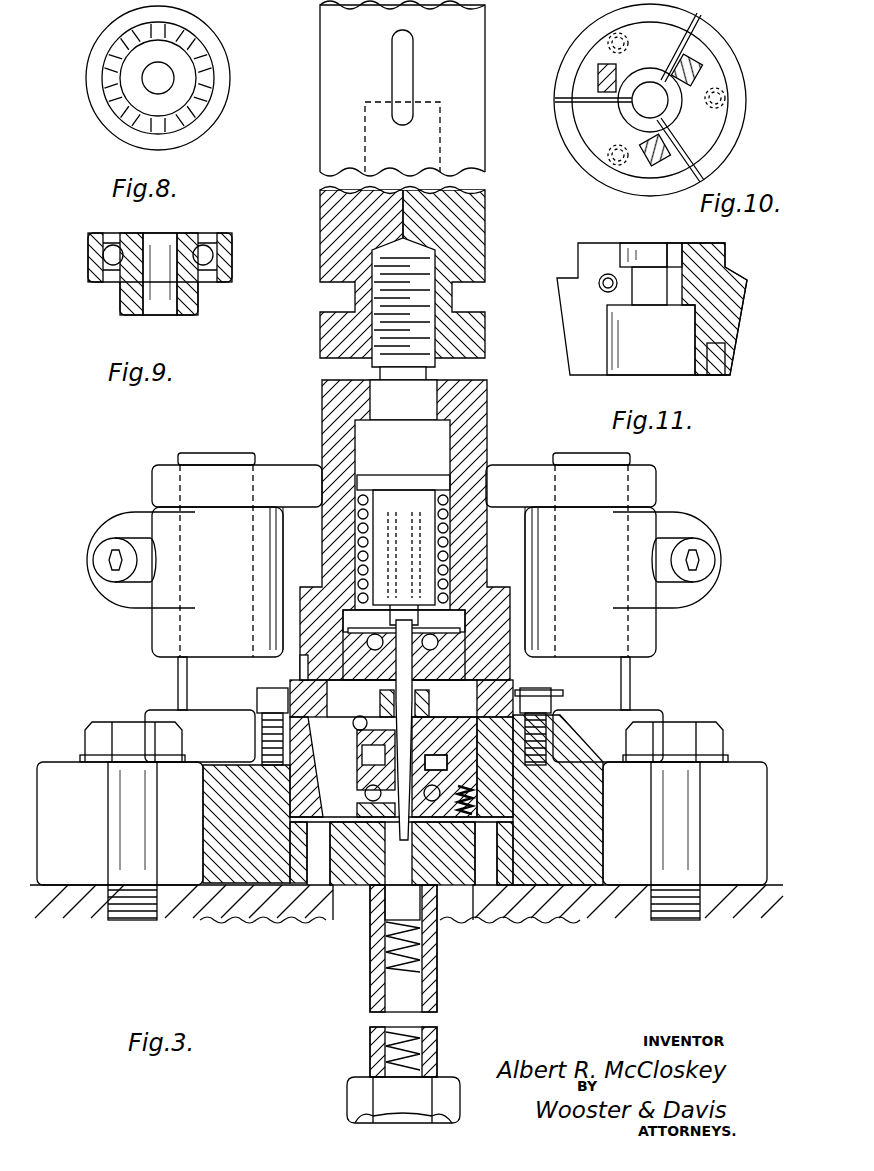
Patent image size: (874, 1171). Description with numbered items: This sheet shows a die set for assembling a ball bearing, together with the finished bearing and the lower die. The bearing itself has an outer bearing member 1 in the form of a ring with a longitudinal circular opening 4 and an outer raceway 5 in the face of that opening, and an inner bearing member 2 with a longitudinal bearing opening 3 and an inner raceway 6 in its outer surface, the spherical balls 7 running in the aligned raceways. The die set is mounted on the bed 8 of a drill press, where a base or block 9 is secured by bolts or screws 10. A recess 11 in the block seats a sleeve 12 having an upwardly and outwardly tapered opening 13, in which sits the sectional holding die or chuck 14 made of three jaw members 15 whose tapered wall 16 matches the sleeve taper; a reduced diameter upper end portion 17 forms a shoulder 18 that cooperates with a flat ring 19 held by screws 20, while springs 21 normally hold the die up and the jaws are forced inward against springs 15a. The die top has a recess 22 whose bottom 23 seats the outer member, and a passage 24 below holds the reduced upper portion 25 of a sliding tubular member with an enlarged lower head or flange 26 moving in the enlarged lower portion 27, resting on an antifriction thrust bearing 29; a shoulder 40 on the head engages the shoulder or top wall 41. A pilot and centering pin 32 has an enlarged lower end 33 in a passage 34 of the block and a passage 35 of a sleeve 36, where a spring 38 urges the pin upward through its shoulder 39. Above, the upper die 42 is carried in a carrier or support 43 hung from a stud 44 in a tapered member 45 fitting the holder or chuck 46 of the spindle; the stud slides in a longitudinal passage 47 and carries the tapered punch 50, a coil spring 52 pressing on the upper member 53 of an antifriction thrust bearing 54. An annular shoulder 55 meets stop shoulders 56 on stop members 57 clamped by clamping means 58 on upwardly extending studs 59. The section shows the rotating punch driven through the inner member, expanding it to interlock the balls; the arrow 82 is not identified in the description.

In FIG. 8, the outer bearing member 1 is at (218, 103).
In FIG. 9, the outer bearing member 1 is at (228, 270).
In FIG. 3, the outer bearing member 1 is at (368, 700).
In FIG. 8, the inner bearing member 2 is at (190, 68).
In FIG. 9, the inner bearing member 2 is at (190, 305).
In FIG. 3, the inner bearing member 2 is at (352, 718).
In FIG. 8, the longitudinal bearing opening 3 is at (158, 92).
In FIG. 9, the longitudinal bearing opening 3 is at (160, 316).
In FIG. 8, the longitudinal circular opening 4 is at (132, 118).
In FIG. 9, the longitudinal circular opening 4 is at (205, 240).
In FIG. 9, the outer raceway 5 is at (210, 258).
In FIG. 9, the inner raceway 6 is at (160, 274).
In FIG. 8, the spherical balls 7 is at (206, 90).
In FIG. 9, the spherical balls 7 is at (226, 243).
In FIG. 3, the spherical balls 7 is at (375, 706).
In FIG. 3, the bed of the drill press 8 is at (95, 905).
In FIG. 3, the base or block 9 is at (736, 756).
In FIG. 3, the bolts or screws 10 is at (110, 842).
In FIG. 10, the recess 11 is at (535, 100).
In FIG. 3, the recess 11 is at (245, 780).
In FIG. 3, the sleeve 12 is at (516, 800).
In FIG. 3, the tapered opening 13 is at (316, 767).
In FIG. 10, the sectional holding die or chuck 14 is at (588, 192).
In FIG. 11, the sectional holding die or chuck 14 is at (593, 388).
In FIG. 3, the sectional holding die or chuck 14 is at (500, 690).
In FIG. 10, the jaw members 15 is at (598, 18).
In FIG. 11, the jaw members 15 is at (738, 312).
In FIG. 10, the springs 15a is at (580, 60).
In FIG. 11, the springs 15a is at (600, 290).
In FIG. 11, the tapered wall 16 is at (735, 336).
In FIG. 11, the reduced diameter upper end portion 17 is at (728, 246).
In FIG. 10, the shoulder 18 is at (570, 140).
In FIG. 11, the shoulder 18 is at (737, 278).
In FIG. 3, the flat ring 19 is at (508, 700).
In FIG. 3, the screws 20 is at (255, 692).
In FIG. 3, the springs 21 is at (520, 825).
In FIG. 10, the recess 22 is at (627, 122).
In FIG. 11, the recess 22 is at (632, 248).
In FIG. 10, the bottom of the recess 23 is at (675, 115).
In FIG. 11, the bottom of the recess 23 is at (674, 252).
In FIG. 10, the passage 24 is at (650, 100).
In FIG. 11, the passage 24 is at (648, 305).
In FIG. 3, the passage 24 is at (362, 748).
In FIG. 3, the reduced upper portion of sliding tubular member 25 is at (420, 748).
In FIG. 3, the enlarged lower head or flange 26 is at (436, 762).
In FIG. 11, the enlarged lower portion 27 is at (648, 375).
In FIG. 3, the enlarged lower portion 27 is at (445, 757).
In FIG. 3, the antifriction thrust bearing 29 is at (357, 810).
In FIG. 3, the pilot and centering pin 32 is at (420, 900).
In FIG. 3, the enlarged lower end 33 is at (372, 915).
In FIG. 3, the passage 34 is at (372, 890).
In FIG. 3, the passage 35 is at (422, 990).
In FIG. 3, the sleeve 36 is at (437, 962).
In FIG. 3, the spring 38 is at (437, 1032).
In FIG. 3, the shoulder 39 is at (430, 930).
In FIG. 3, the shoulder 40 is at (365, 778).
In FIG. 11, the shoulder or top wall 41 is at (608, 328).
In FIG. 3, the shoulder or top wall 41 is at (358, 763).
In FIG. 3, the upper die 42 is at (345, 664).
In FIG. 3, the carrier or support 43 is at (478, 448).
In FIG. 3, the stud 44 is at (430, 378).
In FIG. 3, the tapered member 45 is at (440, 226).
In FIG. 3, the holder or chuck 46 is at (478, 153).
In FIG. 3, the longitudinal passage 47 is at (365, 795).
In FIG. 3, the tapered punch 50 is at (418, 730).
In FIG. 3, the coil spring 52 is at (450, 552).
In FIG. 3, the upper member of thrust bearing 53 is at (440, 612).
In FIG. 3, the antifriction thrust bearing 54 is at (462, 652).
In FIG. 3, the annular shoulder 55 is at (492, 592).
In FIG. 3, the stop shoulders 56 is at (293, 508).
In FIG. 3, the stop members 57 is at (157, 496).
In FIG. 3, the clamping means 58 is at (113, 580).
In FIG. 3, the upwardly extending studs 59 is at (178, 672).
In FIG. 3, the arrow 82 is at (410, 457).